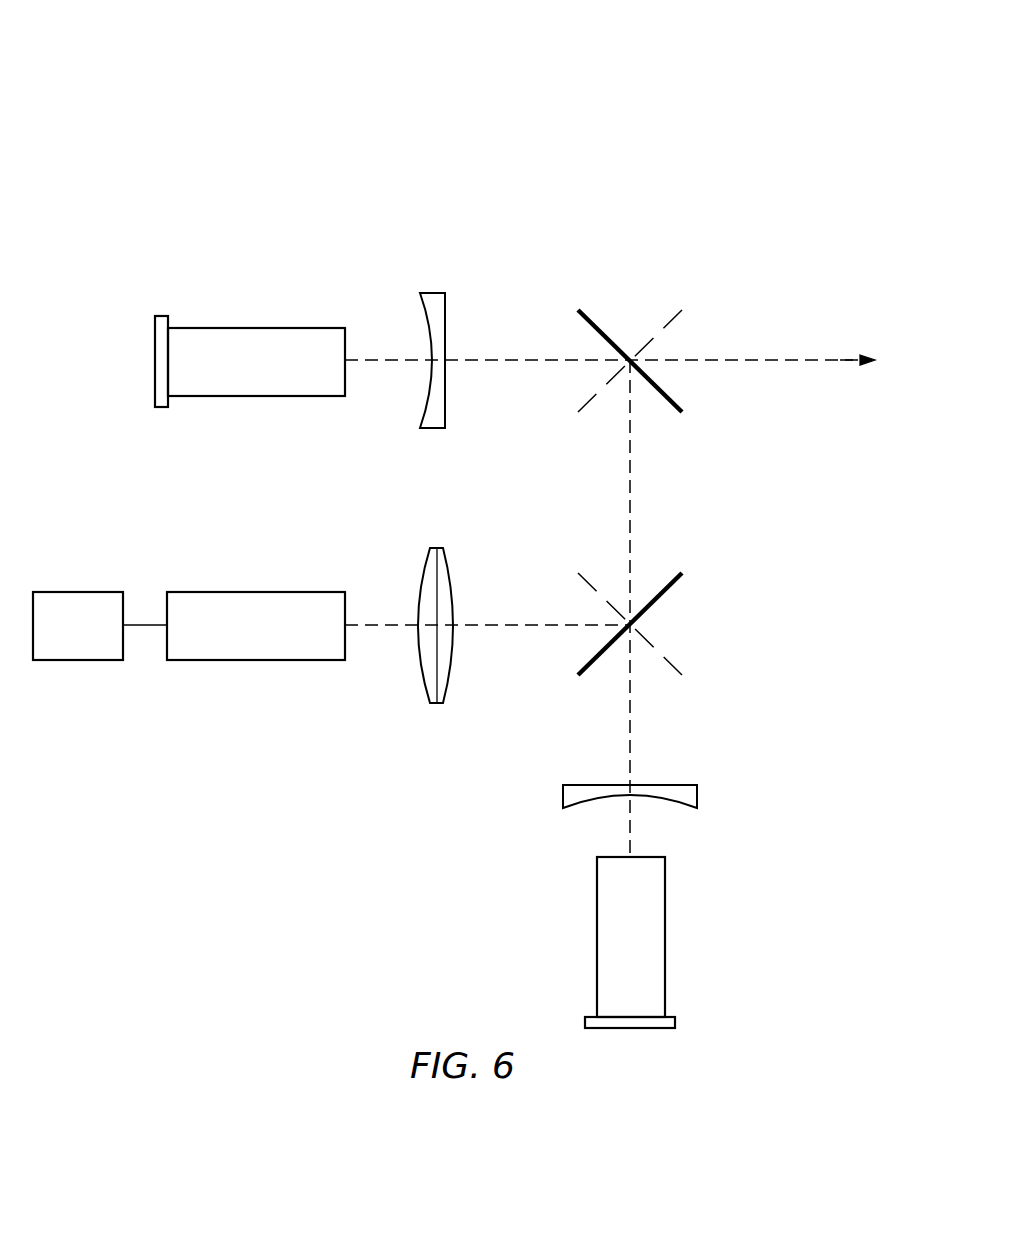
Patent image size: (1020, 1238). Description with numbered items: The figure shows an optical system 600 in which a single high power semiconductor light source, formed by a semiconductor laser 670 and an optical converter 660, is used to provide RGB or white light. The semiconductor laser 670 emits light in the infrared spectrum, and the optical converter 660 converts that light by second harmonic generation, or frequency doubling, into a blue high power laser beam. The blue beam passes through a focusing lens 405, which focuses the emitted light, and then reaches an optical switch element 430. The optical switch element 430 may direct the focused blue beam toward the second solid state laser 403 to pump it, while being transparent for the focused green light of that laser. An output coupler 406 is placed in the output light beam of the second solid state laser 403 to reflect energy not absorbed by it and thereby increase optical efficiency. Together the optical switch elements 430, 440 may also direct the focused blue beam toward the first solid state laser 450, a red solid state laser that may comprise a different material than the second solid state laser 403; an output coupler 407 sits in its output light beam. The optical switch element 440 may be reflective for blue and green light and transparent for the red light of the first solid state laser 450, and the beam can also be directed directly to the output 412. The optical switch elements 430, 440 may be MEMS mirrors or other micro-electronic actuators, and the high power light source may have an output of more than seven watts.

The optical system 600 is at (357, 139).
The first solid state laser 450 is at (255, 328).
The output coupler 407 is at (427, 293).
The optical switch element 440 is at (607, 336).
The output 412 is at (869, 358).
The semiconductor laser 670 is at (78, 660).
The optical converter 660 is at (255, 660).
The focusing lens 405 is at (420, 665).
The optical switch element 430 is at (657, 598).
The output coupler 406 is at (698, 797).
The second solid state laser 403 is at (665, 935).